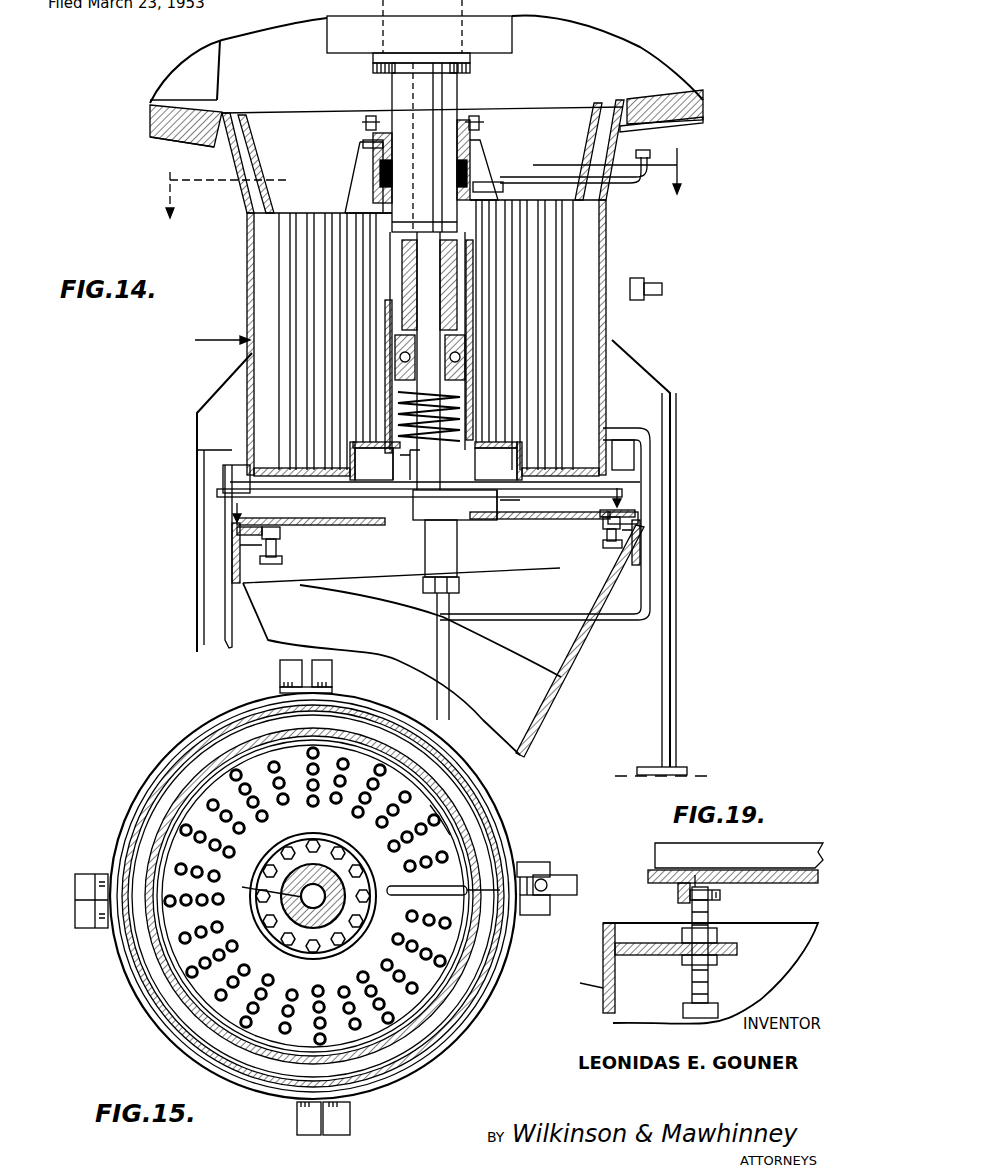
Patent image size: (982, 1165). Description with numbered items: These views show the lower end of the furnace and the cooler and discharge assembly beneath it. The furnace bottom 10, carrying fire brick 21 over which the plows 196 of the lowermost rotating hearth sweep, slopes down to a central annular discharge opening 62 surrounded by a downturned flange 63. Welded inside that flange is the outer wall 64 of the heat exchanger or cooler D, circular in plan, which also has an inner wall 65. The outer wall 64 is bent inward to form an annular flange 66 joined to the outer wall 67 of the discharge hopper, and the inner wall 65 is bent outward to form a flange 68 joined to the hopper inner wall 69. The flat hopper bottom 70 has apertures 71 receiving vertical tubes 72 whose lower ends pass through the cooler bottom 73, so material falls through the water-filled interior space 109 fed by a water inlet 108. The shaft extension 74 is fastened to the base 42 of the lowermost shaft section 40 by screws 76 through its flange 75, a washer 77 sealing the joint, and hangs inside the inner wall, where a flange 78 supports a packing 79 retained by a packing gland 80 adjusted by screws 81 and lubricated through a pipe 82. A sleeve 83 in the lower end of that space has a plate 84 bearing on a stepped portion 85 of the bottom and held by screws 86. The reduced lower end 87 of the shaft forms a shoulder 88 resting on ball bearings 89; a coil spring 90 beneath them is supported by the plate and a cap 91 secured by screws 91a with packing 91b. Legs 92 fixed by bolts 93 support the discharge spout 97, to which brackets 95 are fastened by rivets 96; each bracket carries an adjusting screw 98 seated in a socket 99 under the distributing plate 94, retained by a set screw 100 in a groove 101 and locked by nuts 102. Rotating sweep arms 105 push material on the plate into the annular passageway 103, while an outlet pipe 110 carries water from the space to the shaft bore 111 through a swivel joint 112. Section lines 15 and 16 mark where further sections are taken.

In FIG. 14, the bottom 10 is at (152, 142).
In FIG. 14, the section line 15 is at (423, 196).
In FIG. 14, the section line 16 is at (431, 505).
In FIG. 14, the fire brick 21 is at (150, 122).
In FIG. 14, the lowermost section 40 is at (535, 14).
In FIG. 14, the base 42 is at (512, 42).
In FIG. 14, the discharge opening 62 is at (232, 158).
In FIG. 14, the downturned flange 63 is at (688, 131).
In FIG. 14, the outer wall 64 is at (608, 234).
In FIG. 15, the outer wall 64 is at (128, 832).
In FIG. 14, the inner wall 65 is at (395, 220).
In FIG. 14, the annular flange 66 is at (603, 105).
In FIG. 14, the outer wall of discharge hopper 67 is at (590, 135).
In FIG. 15, the outer wall of discharge hopper 67 is at (163, 822).
In FIG. 14, the annular flange 68 is at (480, 128).
In FIG. 14, the inner wall of discharge hopper 69 is at (497, 165).
In FIG. 15, the inner wall of discharge hopper 69 is at (260, 855).
In FIG. 14, the bottom 70 is at (250, 232).
In FIG. 15, the bottom 70 is at (430, 805).
In FIG. 15, the apertures 71 is at (225, 990).
In FIG. 14, the tubes 72 is at (300, 296).
In FIG. 14, the bottom 73 is at (258, 492).
In FIG. 14, the shaft extension 74 is at (455, 97).
In FIG. 15, the shaft extension 74 is at (295, 920).
In FIG. 14, the annular flange 75 is at (395, 78).
In FIG. 14, the screws 76 is at (392, 68).
In FIG. 14, the washer 77 is at (373, 60).
In FIG. 14, the annular flange 78 is at (348, 200).
In FIG. 14, the packing 79 is at (356, 182).
In FIG. 14, the packing gland 80 is at (368, 150).
In FIG. 15, the packing gland 80 is at (261, 885).
In FIG. 14, the adjusting screws 81 is at (365, 130).
In FIG. 15, the adjusting screws 81 is at (340, 846).
In FIG. 14, the pipe 82 is at (628, 186).
In FIG. 15, the pipe 82 is at (400, 896).
In FIG. 14, the sleeve 83 is at (400, 418).
In FIG. 14, the annular plate 84 is at (375, 462).
In FIG. 14, the stepped up portion 85 is at (510, 488).
In FIG. 14, the screws 86 is at (498, 464).
In FIG. 14, the lower end portion 87 is at (395, 405).
In FIG. 14, the annular shoulder 88 is at (422, 336).
In FIG. 14, the ball bearings 89 is at (416, 360).
In FIG. 14, the coil spring 90 is at (465, 405).
In FIG. 14, the cap 91 is at (402, 464).
In FIG. 14, the screws 91a is at (395, 490).
In FIG. 14, the packing 91b is at (431, 465).
In FIG. 14, the supporting legs 92 is at (203, 543).
In FIG. 15, the supporting legs 92 is at (333, 670).
In FIG. 15, the bolts 93 is at (285, 682).
In FIG. 14, the distributing plate 94 is at (335, 525).
In FIG. 19, the distributing plate 94 is at (655, 875).
In FIG. 14, the brackets 95 is at (240, 570).
In FIG. 19, the brackets 95 is at (630, 945).
In FIG. 14, the rivet 96 is at (242, 546).
In FIG. 19, the rivet 96 is at (622, 968).
In FIG. 14, the discharge spout 97 is at (235, 605).
In FIG. 19, the discharge spout 97 is at (580, 984).
In FIG. 14, the adjusting screw 98 is at (275, 558).
In FIG. 19, the adjusting screw 98 is at (708, 985).
In FIG. 14, the socket 99 is at (240, 528).
In FIG. 19, the socket 99 is at (678, 893).
In FIG. 19, the set screw 100 is at (722, 893).
In FIG. 19, the circumferential groove 101 is at (697, 880).
In FIG. 14, the lock nuts 102 is at (278, 535).
In FIG. 19, the lock nuts 102 is at (717, 962).
In FIG. 14, the annular discharge passageway 103 is at (625, 512).
In FIG. 19, the sweep arms 105 is at (787, 843).
In FIG. 14, the water inlet 108 is at (644, 286).
In FIG. 15, the water inlet 108 is at (552, 876).
In FIG. 14, the interior space 109 is at (600, 340).
In FIG. 15, the interior space 109 is at (190, 773).
In FIG. 14, the outlet pipe 110 is at (655, 428).
In FIG. 15, the outlet pipe 110 is at (528, 862).
In FIG. 14, the through bore 111 is at (440, 273).
In FIG. 15, the through bore 111 is at (302, 898).
In FIG. 14, the swivel joint 112 is at (460, 592).
In FIG. 14, the plows 196 is at (217, 92).
In FIG. 14, the heat exchanger D is at (212, 340).